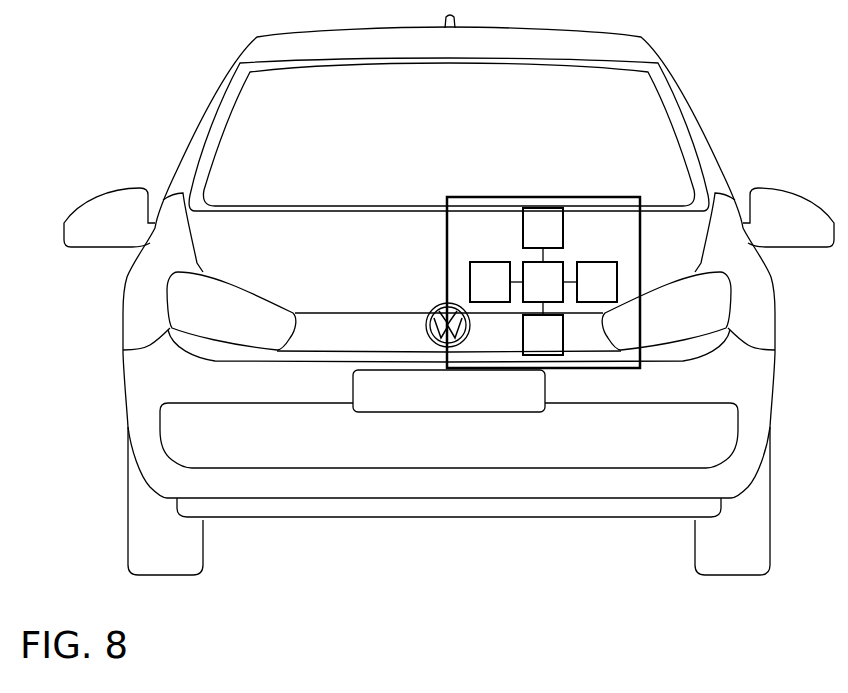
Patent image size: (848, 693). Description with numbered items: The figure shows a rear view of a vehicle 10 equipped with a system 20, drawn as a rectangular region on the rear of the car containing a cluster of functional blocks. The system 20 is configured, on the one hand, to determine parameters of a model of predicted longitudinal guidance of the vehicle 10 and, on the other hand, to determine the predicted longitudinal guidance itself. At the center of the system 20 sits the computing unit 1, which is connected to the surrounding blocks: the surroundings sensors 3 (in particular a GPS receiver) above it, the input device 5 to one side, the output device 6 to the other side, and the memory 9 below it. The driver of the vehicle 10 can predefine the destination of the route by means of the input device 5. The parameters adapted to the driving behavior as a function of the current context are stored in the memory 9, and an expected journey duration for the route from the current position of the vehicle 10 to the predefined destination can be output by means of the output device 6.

The vehicle 10 is at (682, 79).
The system 20 is at (639, 232).
The computing unit 1 is at (543, 282).
The surroundings sensors 3 is at (543, 228).
The input device 5 is at (490, 282).
The output device 6 is at (597, 282).
The memory 9 is at (543, 335).